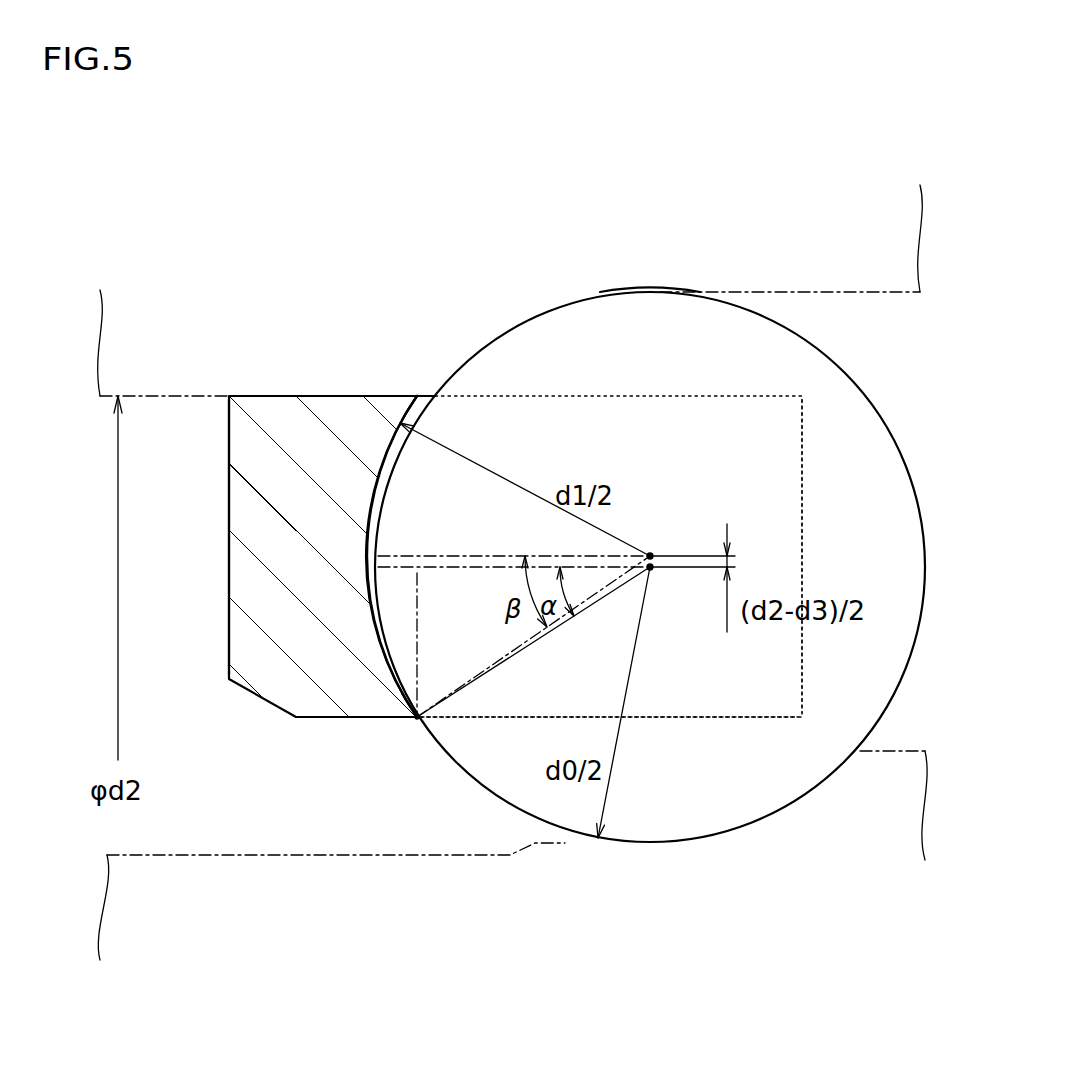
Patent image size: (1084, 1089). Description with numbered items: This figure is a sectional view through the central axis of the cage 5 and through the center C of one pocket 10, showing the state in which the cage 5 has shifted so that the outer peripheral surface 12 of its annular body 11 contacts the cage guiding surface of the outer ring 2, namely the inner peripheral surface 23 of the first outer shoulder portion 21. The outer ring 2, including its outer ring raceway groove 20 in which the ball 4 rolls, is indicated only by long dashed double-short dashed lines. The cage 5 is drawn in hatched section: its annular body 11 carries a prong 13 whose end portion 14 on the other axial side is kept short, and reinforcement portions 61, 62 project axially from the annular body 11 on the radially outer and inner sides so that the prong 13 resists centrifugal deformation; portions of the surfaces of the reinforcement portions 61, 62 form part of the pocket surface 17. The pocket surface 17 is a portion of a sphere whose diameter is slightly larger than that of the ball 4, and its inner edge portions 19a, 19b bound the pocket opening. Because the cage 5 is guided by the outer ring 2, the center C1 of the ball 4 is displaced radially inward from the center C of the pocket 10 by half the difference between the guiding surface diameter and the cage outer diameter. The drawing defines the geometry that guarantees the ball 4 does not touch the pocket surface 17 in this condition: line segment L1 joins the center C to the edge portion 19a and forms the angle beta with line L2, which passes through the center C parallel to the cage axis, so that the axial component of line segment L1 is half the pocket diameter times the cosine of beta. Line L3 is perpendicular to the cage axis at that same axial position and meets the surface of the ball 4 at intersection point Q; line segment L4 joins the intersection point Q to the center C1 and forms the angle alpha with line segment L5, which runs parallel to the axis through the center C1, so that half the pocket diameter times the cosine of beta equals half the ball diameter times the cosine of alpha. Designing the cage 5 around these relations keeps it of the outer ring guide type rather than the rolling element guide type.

The outer ring 2 is at (920, 306).
The ball 4 is at (742, 813).
The cage 5 is at (246, 704).
The pocket 10 is at (774, 483).
The annular body 11 is at (243, 531).
The outer peripheral surface 12 is at (268, 393).
The prong 13 is at (690, 720).
The end portion 14 is at (803, 512).
The pocket surface 17 is at (407, 414).
The edge portion 19a is at (417, 723).
The upper arc end 19b is at (418, 393).
The outer ring raceway groove 20 is at (595, 300).
The first outer shoulder portion 21 is at (155, 343).
The inner peripheral surface 23 is at (310, 398).
The reinforcement portion 61 is at (397, 407).
The reinforcement portion 62 is at (397, 710).
The center of the pocket C is at (653, 553).
The center of the ball C1 is at (653, 572).
The intersection point Q is at (420, 710).
The line segment L1 is at (585, 607).
The line L2 is at (435, 553).
The line L3 is at (418, 602).
The line segment L4 is at (613, 597).
The line segment L5 is at (485, 554).